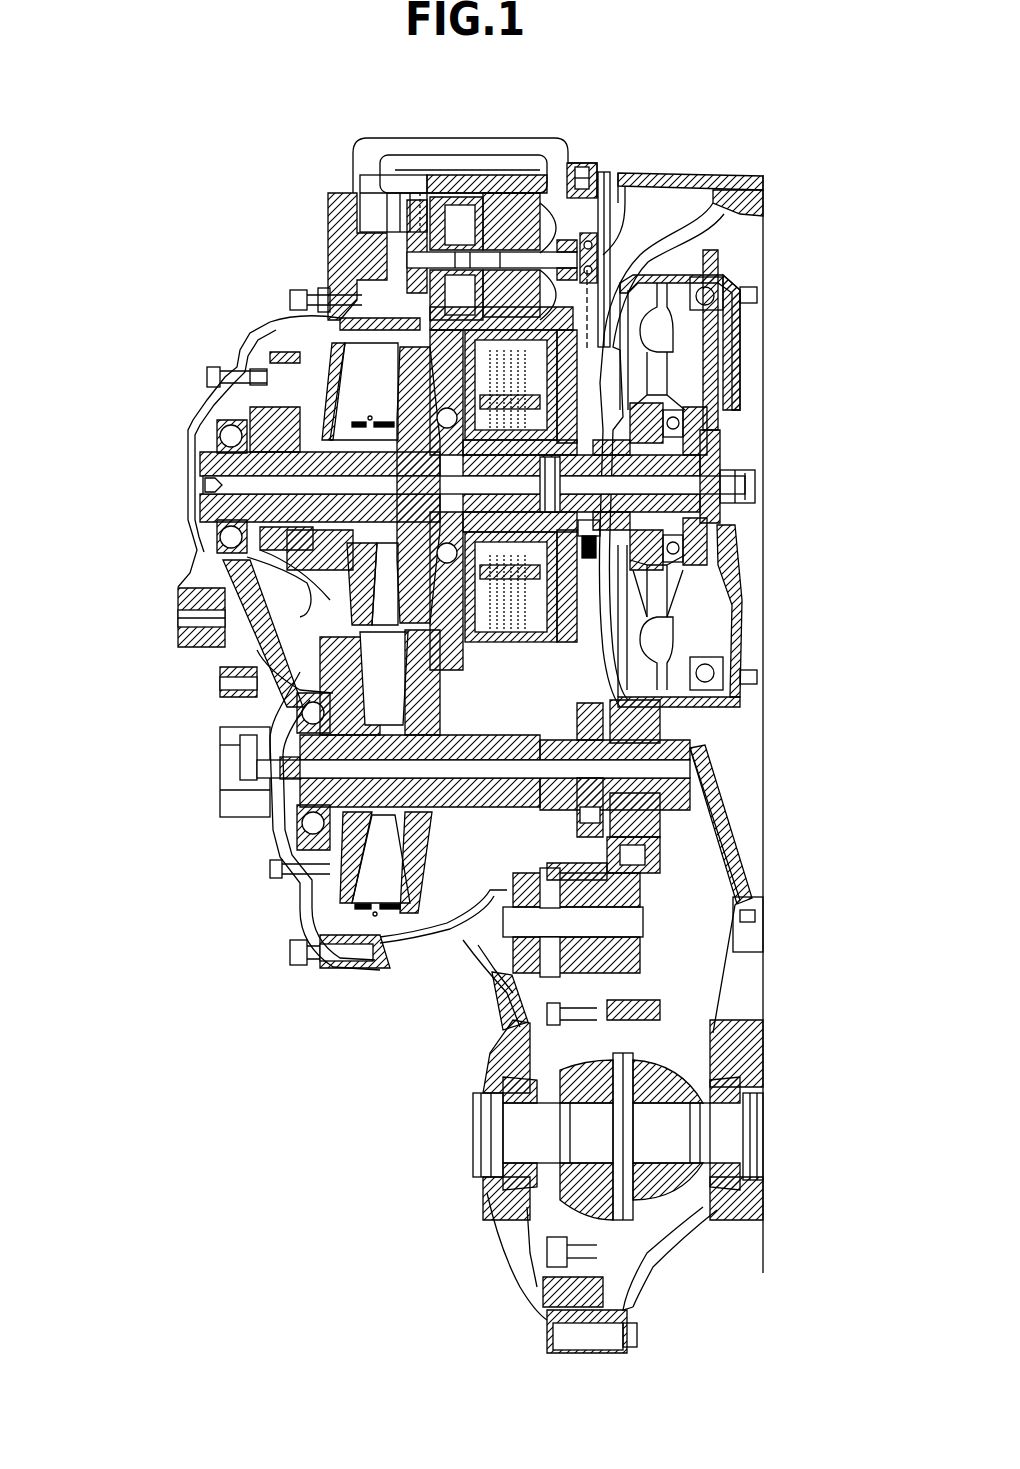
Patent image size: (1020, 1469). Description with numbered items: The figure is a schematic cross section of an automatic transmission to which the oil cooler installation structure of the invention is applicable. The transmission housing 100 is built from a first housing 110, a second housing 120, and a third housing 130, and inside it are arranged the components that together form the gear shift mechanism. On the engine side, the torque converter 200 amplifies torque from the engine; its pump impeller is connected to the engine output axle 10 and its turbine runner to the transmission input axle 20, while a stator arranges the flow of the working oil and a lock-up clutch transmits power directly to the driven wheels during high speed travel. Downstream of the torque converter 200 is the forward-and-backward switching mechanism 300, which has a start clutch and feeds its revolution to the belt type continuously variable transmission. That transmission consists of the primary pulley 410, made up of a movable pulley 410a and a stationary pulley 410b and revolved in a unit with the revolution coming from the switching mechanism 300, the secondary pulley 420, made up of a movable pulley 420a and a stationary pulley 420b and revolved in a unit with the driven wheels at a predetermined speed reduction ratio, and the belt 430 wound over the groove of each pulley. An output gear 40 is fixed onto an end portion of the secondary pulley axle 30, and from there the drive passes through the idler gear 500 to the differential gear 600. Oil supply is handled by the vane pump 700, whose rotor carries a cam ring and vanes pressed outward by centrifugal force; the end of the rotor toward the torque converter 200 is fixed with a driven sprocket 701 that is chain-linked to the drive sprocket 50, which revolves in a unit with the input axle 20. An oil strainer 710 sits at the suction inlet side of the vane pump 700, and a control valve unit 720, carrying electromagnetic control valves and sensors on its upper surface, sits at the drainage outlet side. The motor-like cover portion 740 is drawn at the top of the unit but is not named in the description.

The engine output axle 10 is at (760, 472).
The transmission input axle 20 is at (690, 485).
The secondary pulley axle 30 is at (700, 776).
The output gear 40 is at (690, 815).
The drive sprocket 50 is at (592, 545).
The transmission housing 100 is at (670, 165).
The first housing 110 is at (213, 407).
The second housing 120 is at (333, 257).
The third housing 130 is at (722, 176).
The torque converter 200 is at (578, 405).
The forward-and-backward switching mechanism 300 is at (690, 398).
The primary pulley 410 is at (383, 376).
The movable pulley 410a is at (360, 595).
The stationary pulley 410b is at (420, 615).
The secondary pulley 420 is at (402, 933).
The movable pulley 420a is at (290, 727).
The stationary pulley 420b is at (347, 670).
The belt 430 is at (340, 967).
The idler gear 500 is at (513, 917).
The differential gear 600 is at (520, 1133).
The vane pump 700 is at (587, 197).
The driven sprocket 701 is at (600, 273).
The oil strainer 710 is at (447, 160).
The control valve unit 720 is at (373, 205).
The motor cover 740 is at (517, 138).